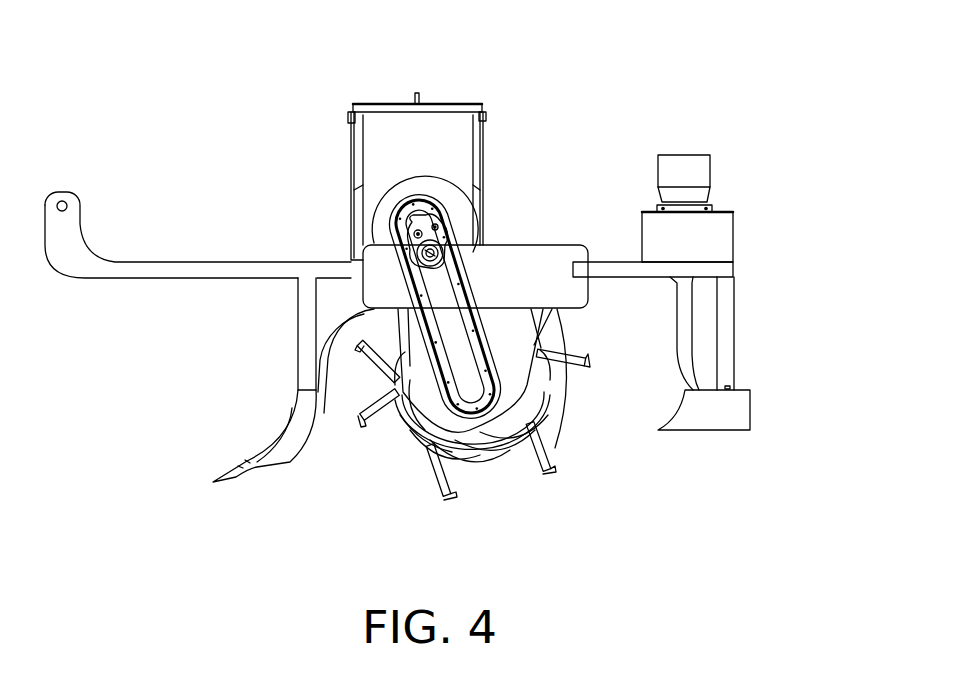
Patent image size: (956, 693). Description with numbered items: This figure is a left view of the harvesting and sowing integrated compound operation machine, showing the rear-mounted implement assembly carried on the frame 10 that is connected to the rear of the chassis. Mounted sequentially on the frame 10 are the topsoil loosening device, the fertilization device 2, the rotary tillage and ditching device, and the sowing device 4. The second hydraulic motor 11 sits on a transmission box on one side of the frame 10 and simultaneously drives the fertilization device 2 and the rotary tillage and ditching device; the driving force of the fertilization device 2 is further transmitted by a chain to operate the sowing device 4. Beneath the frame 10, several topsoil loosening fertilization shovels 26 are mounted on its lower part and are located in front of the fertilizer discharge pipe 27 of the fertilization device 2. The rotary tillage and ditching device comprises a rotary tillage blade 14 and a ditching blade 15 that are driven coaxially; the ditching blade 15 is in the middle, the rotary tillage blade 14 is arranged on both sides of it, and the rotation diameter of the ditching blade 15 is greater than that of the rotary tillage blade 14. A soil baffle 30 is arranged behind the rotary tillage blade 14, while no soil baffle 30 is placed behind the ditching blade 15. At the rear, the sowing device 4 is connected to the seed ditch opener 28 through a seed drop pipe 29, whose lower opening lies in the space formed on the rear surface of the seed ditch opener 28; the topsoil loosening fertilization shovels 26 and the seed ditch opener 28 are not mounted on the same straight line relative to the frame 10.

The fertilization device 2 is at (440, 157).
The sowing device 4 is at (700, 250).
The frame 10 is at (308, 318).
The second hydraulic motor 11 is at (423, 227).
The rotary tillage blade 14 is at (500, 460).
The ditching blade 15 is at (437, 466).
The topsoil loosening fertilization shovel 26 is at (255, 470).
The fertilizer discharge pipe 27 is at (310, 433).
The seed ditch opener 28 is at (737, 413).
The seed drop pipe 29 is at (683, 342).
The soil baffle 30 is at (562, 425).